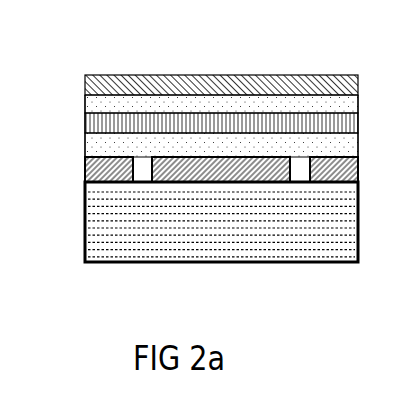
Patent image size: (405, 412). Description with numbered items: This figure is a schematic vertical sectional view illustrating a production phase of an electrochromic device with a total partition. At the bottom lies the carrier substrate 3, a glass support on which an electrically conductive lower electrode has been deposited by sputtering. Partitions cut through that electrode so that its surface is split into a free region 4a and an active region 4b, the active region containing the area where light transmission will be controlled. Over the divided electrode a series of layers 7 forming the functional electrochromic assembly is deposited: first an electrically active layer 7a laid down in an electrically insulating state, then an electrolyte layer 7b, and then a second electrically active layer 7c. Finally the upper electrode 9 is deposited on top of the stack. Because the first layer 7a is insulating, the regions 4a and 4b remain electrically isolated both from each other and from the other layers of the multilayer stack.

The carrier substrate 3 is at (202, 263).
The free region of the lower electrode 4a is at (343, 170).
The active region of the lower electrode 4b is at (292, 154).
The series of layers 7 is at (363, 90).
The first electrically active layer 7a is at (104, 144).
The electrolyte layer 7b is at (102, 131).
The second electrically active layer 7c is at (91, 112).
The upper electrode 9 is at (343, 83).